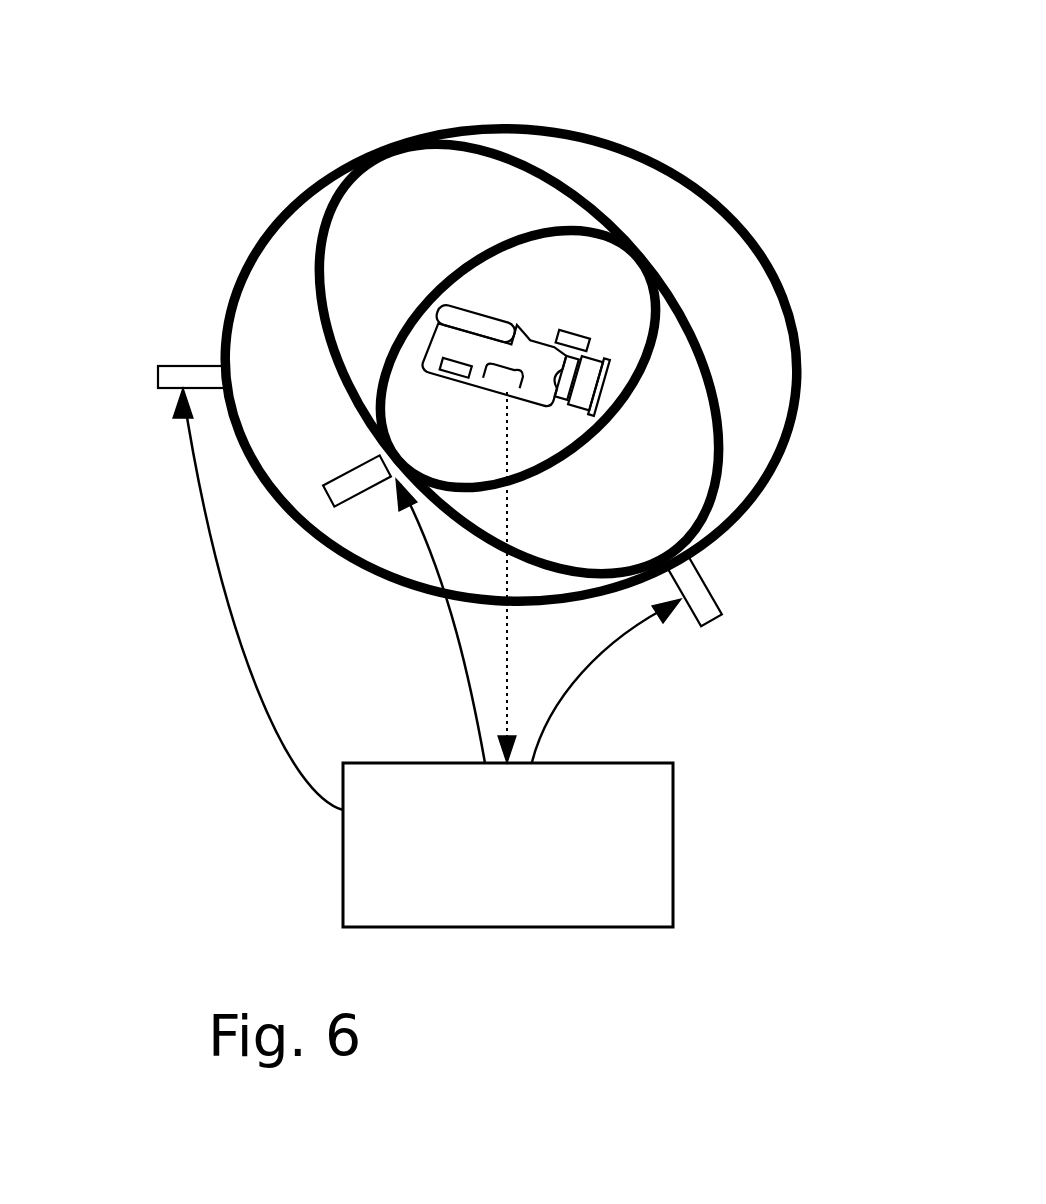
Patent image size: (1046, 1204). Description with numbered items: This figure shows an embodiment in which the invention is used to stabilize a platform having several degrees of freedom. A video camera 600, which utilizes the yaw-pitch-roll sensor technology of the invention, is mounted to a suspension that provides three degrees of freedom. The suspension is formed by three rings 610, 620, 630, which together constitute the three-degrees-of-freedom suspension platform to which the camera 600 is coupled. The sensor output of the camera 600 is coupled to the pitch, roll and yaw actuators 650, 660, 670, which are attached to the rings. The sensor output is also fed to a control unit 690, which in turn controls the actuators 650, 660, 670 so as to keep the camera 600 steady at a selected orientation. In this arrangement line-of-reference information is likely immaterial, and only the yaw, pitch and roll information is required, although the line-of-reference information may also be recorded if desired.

The camera 600 is at (517, 325).
The ring 610 is at (290, 216).
The ring 620 is at (587, 201).
The ring 630 is at (657, 337).
The actuator 650 is at (710, 583).
The actuator 660 is at (363, 492).
The actuator 670 is at (174, 367).
The control unit 690 is at (508, 659).